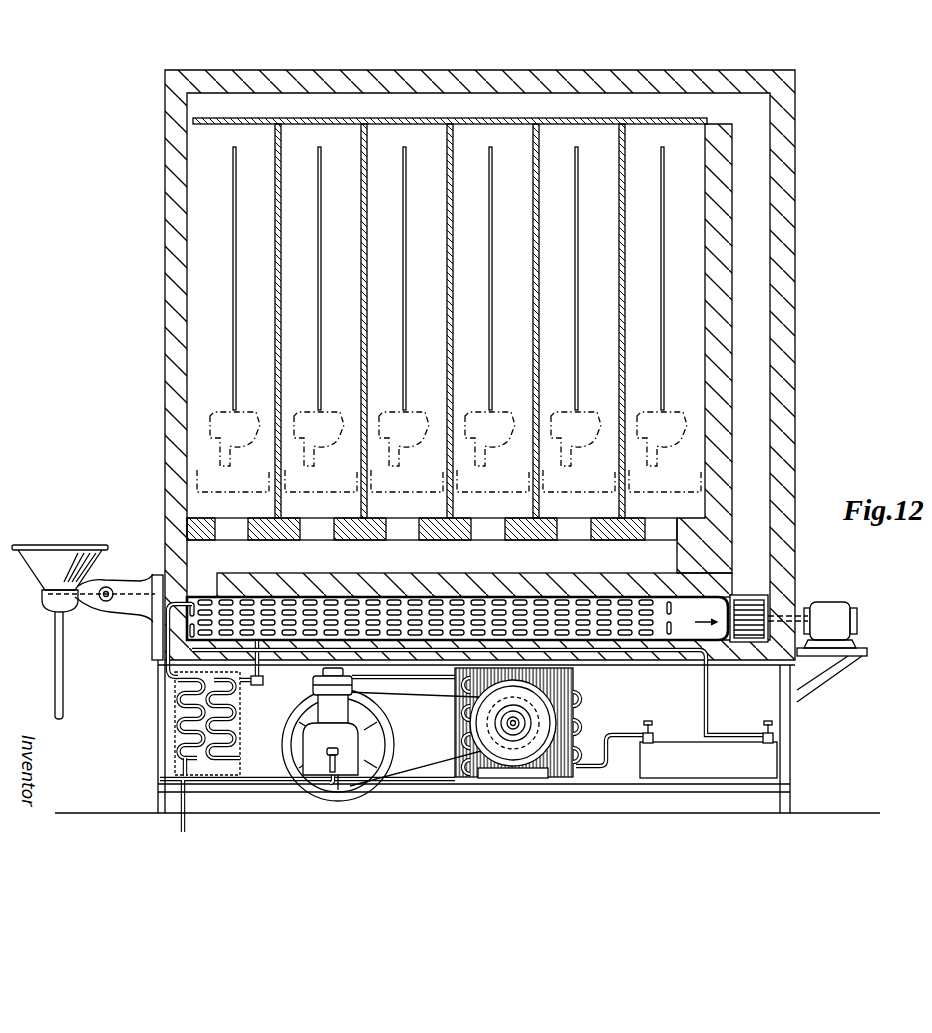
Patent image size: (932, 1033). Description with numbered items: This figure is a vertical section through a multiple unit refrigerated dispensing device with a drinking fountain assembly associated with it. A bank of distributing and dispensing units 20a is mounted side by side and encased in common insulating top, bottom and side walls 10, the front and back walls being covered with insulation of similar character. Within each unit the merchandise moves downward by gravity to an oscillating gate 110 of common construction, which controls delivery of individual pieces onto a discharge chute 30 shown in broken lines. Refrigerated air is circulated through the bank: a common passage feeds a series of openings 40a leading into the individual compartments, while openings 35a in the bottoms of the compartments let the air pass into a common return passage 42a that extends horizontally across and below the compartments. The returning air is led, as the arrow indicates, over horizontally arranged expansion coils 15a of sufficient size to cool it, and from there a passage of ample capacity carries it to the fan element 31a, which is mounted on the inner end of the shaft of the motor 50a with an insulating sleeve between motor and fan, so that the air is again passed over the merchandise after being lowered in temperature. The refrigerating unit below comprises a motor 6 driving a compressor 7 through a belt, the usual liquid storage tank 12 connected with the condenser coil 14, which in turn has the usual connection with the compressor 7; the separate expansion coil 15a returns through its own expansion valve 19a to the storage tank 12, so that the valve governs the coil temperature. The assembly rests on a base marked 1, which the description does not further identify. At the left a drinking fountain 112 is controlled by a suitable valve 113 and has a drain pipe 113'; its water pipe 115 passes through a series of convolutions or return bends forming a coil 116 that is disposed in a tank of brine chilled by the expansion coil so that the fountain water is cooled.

The base frame 1 is at (484, 790).
The motor 6 is at (513, 729).
The compressor 7 is at (379, 725).
The insulating walls 10 is at (788, 270).
The liquid storage tank 12 is at (676, 749).
The condenser coil 14 is at (581, 684).
The expansion coil 15a is at (672, 609).
The expansion valve 19a is at (258, 685).
The dispensing units 20a is at (281, 360).
The discharge chute 30 is at (656, 499).
The blower fan 31a is at (766, 595).
The openings 35a is at (232, 542).
The openings 40a is at (333, 111).
The common return passage 42a is at (474, 574).
The motor 50a is at (840, 598).
The oscillating gate 110 is at (454, 436).
The drinking fountain 112 is at (60, 578).
The valve 113 is at (105, 613).
The drain pipe 113' is at (79, 665).
The water pipe 115 is at (163, 670).
The coil 116 is at (177, 746).